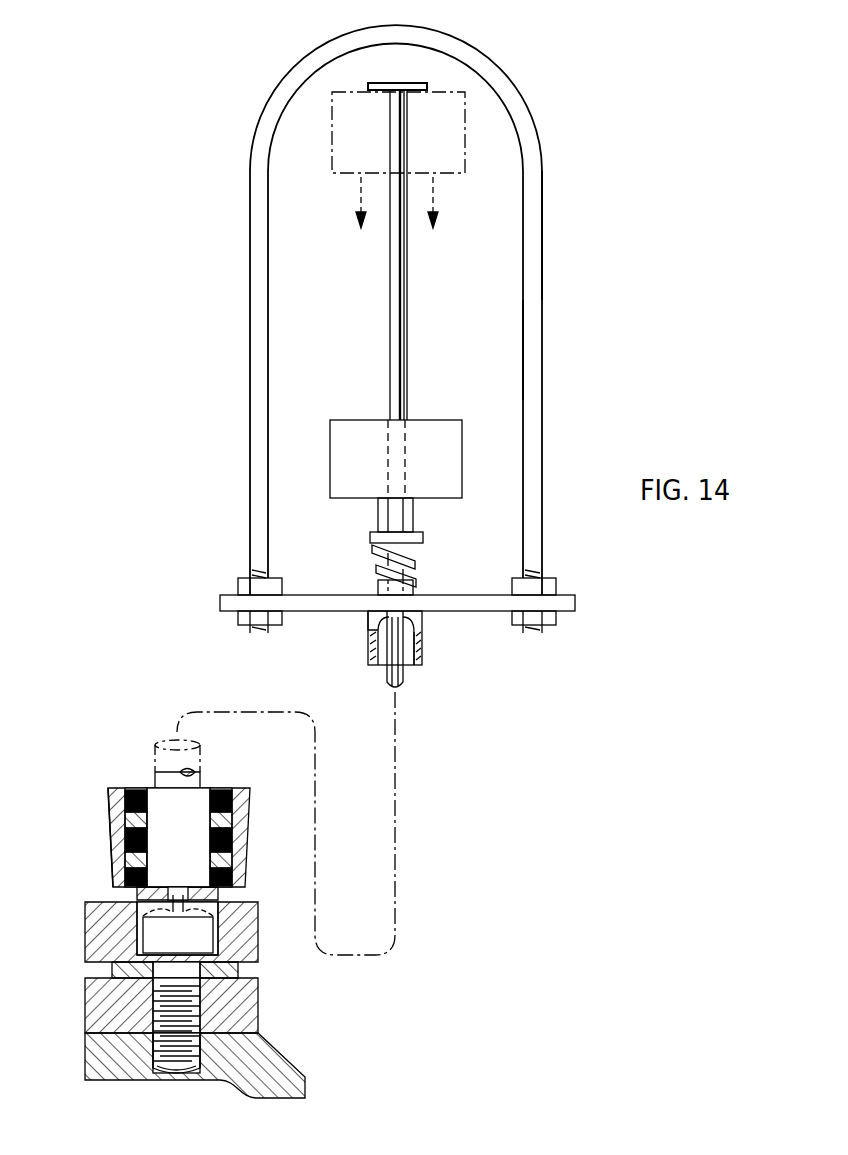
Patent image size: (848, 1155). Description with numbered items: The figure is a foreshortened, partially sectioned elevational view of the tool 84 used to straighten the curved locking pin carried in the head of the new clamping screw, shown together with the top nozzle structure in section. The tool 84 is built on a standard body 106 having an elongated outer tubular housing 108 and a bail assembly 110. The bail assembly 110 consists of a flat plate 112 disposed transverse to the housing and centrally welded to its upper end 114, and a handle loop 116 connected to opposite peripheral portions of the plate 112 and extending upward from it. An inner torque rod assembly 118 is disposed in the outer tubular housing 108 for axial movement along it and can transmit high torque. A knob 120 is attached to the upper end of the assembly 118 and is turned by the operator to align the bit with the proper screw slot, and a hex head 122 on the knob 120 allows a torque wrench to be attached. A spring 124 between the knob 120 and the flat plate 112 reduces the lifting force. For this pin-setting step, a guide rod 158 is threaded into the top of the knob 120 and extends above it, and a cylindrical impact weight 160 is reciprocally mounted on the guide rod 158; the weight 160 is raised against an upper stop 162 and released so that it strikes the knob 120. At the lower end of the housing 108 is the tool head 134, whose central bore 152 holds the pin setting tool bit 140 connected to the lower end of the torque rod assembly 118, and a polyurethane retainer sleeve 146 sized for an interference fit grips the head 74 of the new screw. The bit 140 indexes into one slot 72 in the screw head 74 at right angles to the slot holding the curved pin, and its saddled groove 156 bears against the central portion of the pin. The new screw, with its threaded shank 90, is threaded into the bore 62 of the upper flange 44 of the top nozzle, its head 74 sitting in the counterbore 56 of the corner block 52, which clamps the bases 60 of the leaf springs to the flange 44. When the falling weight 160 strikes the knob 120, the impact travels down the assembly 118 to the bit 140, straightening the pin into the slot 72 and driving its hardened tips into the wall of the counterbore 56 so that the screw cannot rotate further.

The bail assembly 110 is at (471, 42).
The handle loop 116 is at (518, 96).
The tool 84 is at (561, 263).
The flat plate 112 is at (458, 597).
The upper stop 162 is at (388, 83).
The guide rod 158 is at (410, 298).
The impact weight 160 is at (448, 174).
The hex head 122 is at (378, 519).
The knob 120 is at (370, 537).
The spring 124 is at (418, 557).
The upper end 114 is at (368, 614).
The standard body 106 is at (425, 641).
The outer tubular housing 108 is at (421, 652).
The inner torque rod assembly 118 is at (404, 675).
The pin setting tool bit 140 is at (196, 790).
The tool head 134 is at (250, 825).
The retainer sleeve 146 is at (130, 855).
The central bore 152 is at (112, 800).
The saddled groove 156 is at (238, 896).
The counterbore 56 is at (106, 906).
The slot 72 is at (182, 917).
The head 74 is at (207, 935).
The base 60 is at (238, 970).
The corner block 52 is at (85, 980).
The upper flange 44 is at (280, 1058).
The shank 90 is at (195, 1017).
The bore 62 is at (165, 1052).